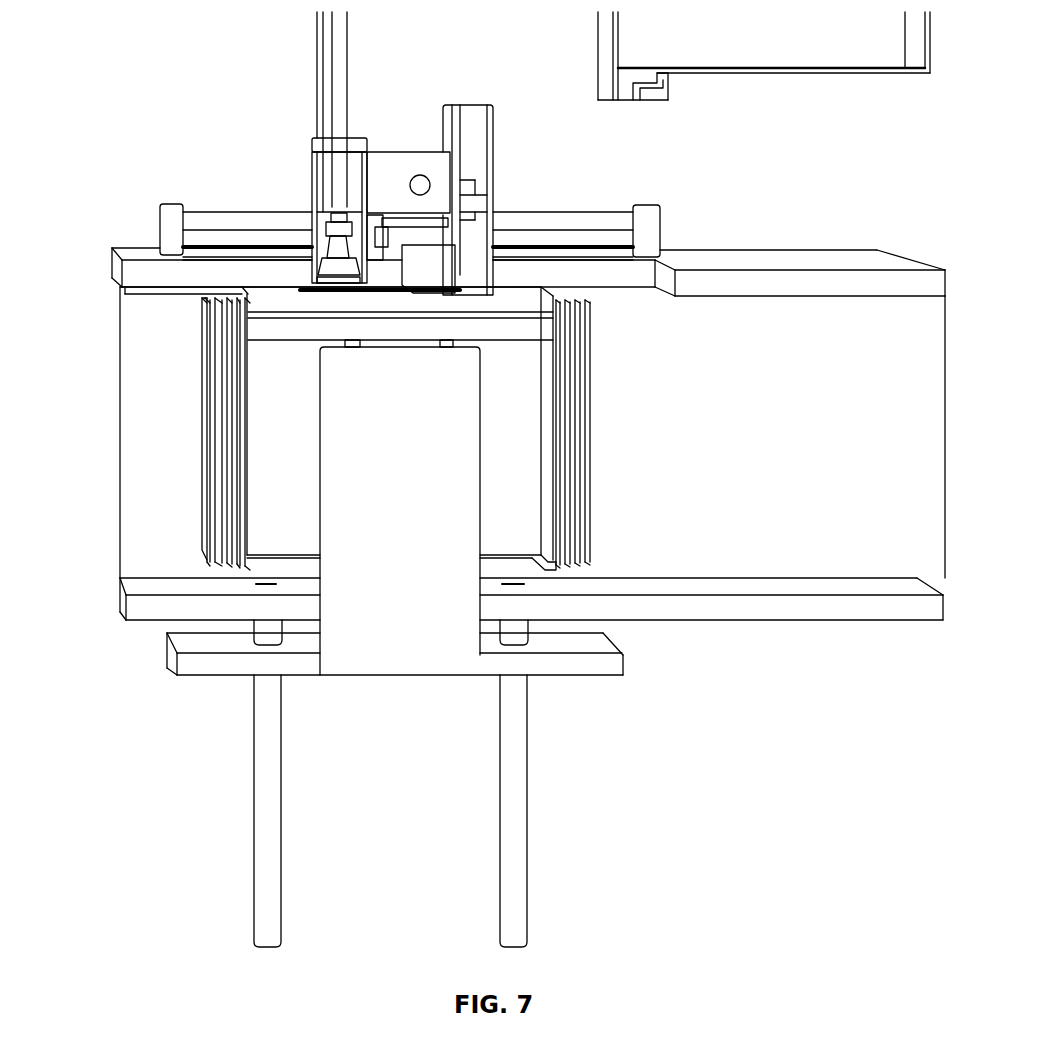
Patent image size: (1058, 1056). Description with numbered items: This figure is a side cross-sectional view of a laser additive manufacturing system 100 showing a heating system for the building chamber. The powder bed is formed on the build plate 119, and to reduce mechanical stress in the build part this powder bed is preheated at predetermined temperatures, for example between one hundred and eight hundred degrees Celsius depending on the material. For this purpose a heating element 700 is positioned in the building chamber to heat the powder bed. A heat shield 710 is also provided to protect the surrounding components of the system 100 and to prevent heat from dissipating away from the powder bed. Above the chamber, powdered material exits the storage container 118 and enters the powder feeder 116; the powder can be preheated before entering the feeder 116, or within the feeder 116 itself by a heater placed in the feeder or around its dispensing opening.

The system 100 is at (183, 118).
The powder feeder 116 is at (494, 103).
The storage container 118 is at (764, 56).
The build plate 119 is at (486, 332).
The heating element 700 is at (229, 424).
The heat shield 710 is at (198, 501).